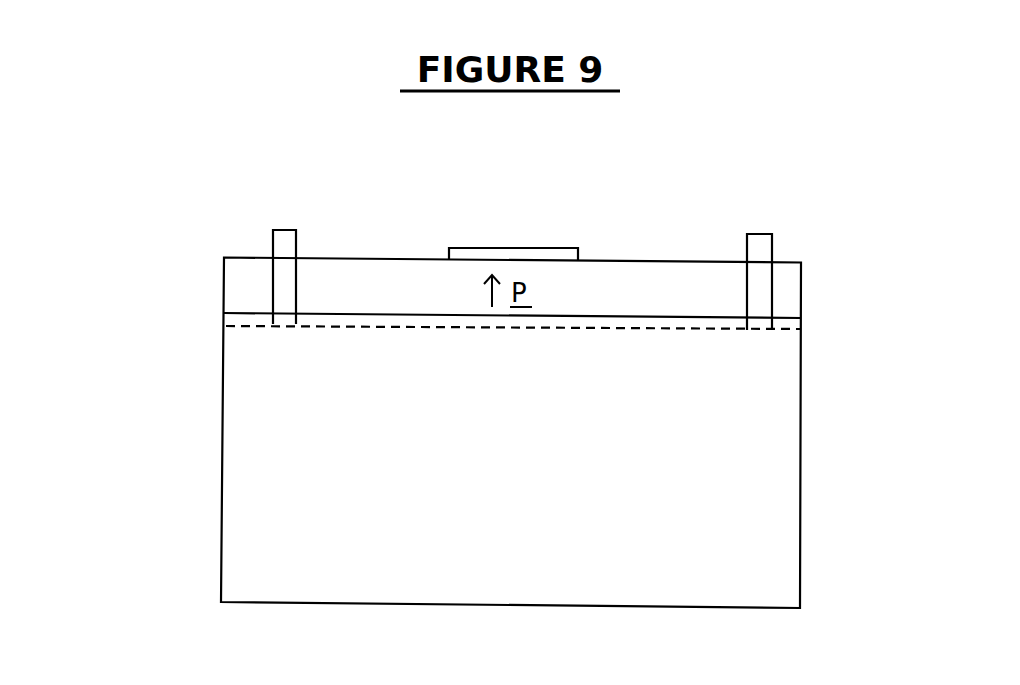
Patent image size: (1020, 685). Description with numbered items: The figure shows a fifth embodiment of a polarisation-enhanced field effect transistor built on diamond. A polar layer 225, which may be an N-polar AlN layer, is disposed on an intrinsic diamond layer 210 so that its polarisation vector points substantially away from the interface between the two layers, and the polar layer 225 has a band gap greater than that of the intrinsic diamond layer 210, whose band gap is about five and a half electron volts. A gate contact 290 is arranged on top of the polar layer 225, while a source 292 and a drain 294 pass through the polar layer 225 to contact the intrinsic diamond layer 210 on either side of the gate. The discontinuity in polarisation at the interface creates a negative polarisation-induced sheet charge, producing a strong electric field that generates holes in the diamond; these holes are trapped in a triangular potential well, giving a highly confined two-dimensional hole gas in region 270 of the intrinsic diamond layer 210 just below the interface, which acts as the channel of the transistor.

The intrinsic diamond layer 210 is at (785, 467).
The polar layer 225 is at (790, 305).
The region of highly confined 2DHG 270 is at (227, 330).
The gate contact 290 is at (516, 255).
The source 292 is at (285, 233).
The drain 294 is at (760, 250).